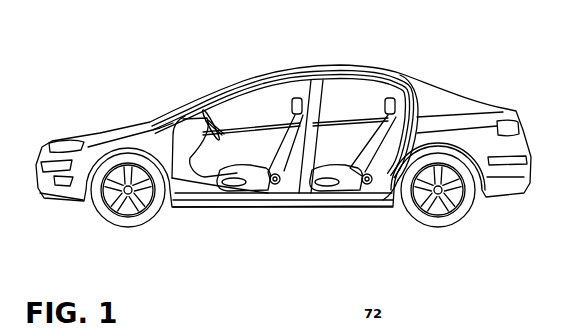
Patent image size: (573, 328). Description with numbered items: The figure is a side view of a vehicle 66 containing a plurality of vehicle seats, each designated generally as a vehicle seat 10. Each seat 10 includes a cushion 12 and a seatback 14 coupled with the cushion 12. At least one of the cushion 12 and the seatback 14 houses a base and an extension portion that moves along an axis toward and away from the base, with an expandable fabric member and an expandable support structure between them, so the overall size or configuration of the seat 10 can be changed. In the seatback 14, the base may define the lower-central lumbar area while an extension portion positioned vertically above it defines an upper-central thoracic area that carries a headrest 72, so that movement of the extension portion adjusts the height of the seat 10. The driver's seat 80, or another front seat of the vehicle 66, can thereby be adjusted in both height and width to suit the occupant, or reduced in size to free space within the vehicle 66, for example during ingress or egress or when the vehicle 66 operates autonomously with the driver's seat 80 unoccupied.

The vehicle seat 10 is at (313, 137).
The cushion 12 is at (249, 178).
The seatback 14 is at (283, 150).
The vehicle 66 is at (445, 76).
The headrest 72 is at (296, 97).
The driver's seat 80 is at (218, 195).